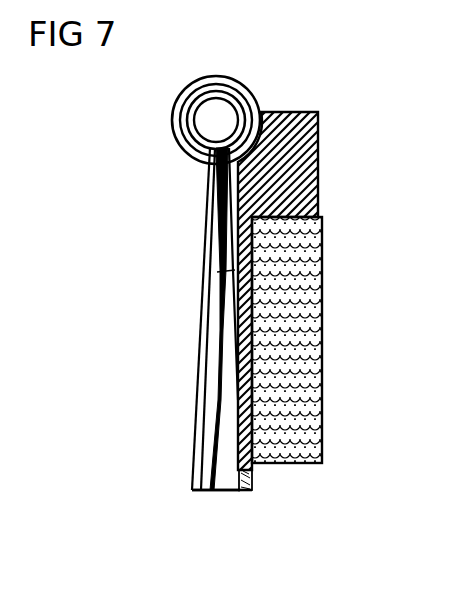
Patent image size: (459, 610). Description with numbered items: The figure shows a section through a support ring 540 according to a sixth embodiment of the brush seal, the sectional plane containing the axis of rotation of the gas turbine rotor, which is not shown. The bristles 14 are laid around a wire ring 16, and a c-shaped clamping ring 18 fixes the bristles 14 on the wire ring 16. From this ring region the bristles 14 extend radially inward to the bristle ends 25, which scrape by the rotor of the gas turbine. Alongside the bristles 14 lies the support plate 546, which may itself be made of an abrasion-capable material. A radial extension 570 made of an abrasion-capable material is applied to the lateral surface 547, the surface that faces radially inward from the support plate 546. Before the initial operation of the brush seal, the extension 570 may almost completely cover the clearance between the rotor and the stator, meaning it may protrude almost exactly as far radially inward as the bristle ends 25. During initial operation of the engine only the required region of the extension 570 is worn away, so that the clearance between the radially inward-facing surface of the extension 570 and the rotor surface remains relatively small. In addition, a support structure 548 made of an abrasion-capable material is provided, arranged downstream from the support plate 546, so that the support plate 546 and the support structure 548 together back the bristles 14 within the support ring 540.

The support ring 540 is at (330, 78).
The support structure 548 is at (306, 350).
The wire ring 16 is at (178, 146).
The clamping ring 18 is at (200, 126).
The bristles 14 is at (217, 212).
The support plate 546 is at (217, 284).
The lateral surface 547 is at (251, 470).
The radial extension 570 is at (244, 492).
The bristle ends 25 is at (220, 493).